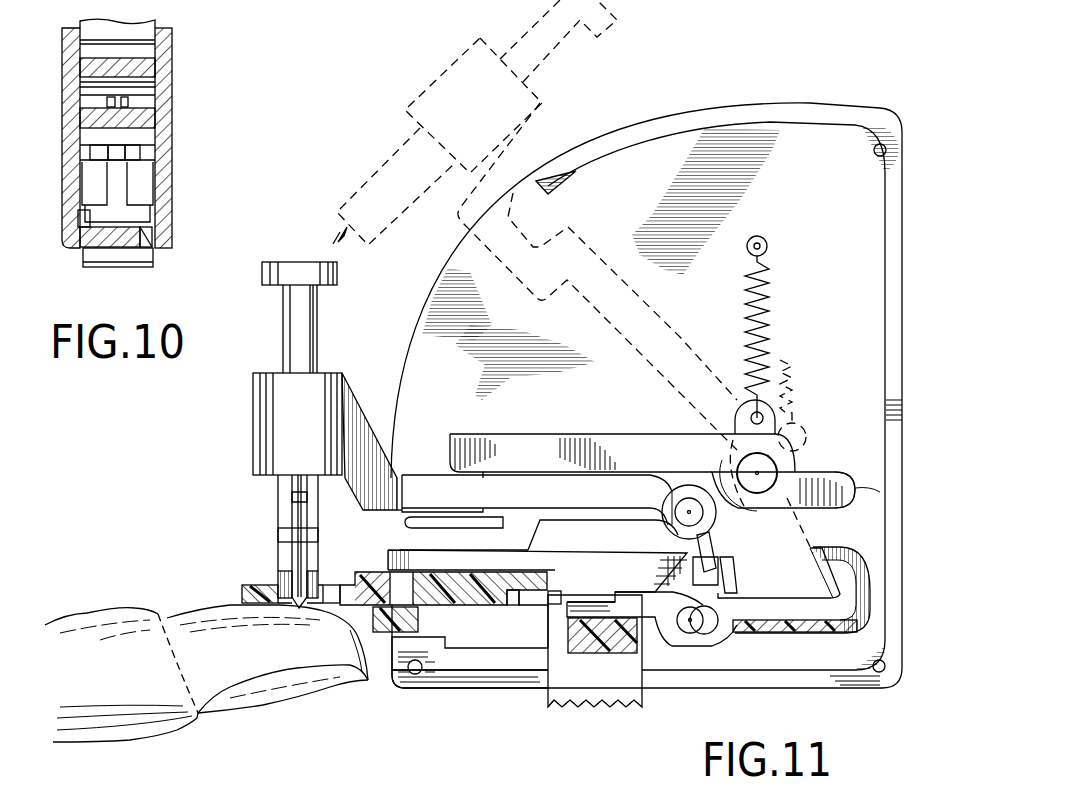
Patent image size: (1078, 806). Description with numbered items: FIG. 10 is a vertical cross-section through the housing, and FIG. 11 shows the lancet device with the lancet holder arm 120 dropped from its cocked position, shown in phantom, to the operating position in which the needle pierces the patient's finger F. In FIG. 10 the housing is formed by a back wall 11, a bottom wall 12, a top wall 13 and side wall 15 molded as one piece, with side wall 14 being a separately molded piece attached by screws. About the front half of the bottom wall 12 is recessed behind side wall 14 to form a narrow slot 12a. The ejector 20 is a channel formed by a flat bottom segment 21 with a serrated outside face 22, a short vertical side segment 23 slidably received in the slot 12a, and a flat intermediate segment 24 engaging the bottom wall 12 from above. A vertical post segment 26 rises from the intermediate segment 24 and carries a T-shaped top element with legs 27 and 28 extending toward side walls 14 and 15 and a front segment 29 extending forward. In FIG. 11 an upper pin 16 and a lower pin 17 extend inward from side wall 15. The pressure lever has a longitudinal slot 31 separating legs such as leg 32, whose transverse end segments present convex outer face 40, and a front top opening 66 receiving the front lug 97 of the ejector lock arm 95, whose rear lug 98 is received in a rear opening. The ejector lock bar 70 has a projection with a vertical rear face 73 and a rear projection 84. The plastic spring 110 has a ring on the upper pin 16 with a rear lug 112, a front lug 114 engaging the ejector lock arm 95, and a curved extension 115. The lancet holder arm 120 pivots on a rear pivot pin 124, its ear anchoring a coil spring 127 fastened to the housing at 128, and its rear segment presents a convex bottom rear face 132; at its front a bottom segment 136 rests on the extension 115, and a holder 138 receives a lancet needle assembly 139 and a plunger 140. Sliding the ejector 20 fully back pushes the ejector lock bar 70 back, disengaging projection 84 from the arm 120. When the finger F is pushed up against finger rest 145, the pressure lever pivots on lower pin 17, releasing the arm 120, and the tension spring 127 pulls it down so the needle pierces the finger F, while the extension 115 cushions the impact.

In FIG. 11, the back wall 11 is at (903, 378).
In FIG. 10, the bottom wall 12 is at (70, 245).
In FIG. 11, the bottom wall 12 is at (513, 676).
In FIG. 10, the slot 12a is at (142, 232).
In FIG. 11, the top wall 13 is at (667, 128).
In FIG. 10, the side wall 14 is at (173, 72).
In FIG. 10, the side wall 15 is at (66, 73).
In FIG. 11, the upper pin 16 is at (701, 512).
In FIG. 11, the lower pin 17 is at (690, 630).
In FIG. 11, the ejector 20 is at (595, 651).
In FIG. 10, the bottom segment 21 is at (121, 256).
In FIG. 11, the serrated outside face 22 is at (604, 706).
In FIG. 10, the side segment 23 is at (146, 228).
In FIG. 10, the intermediate segment 24 is at (88, 218).
In FIG. 10, the post segment 26 is at (117, 188).
In FIG. 10, the leg 27 is at (136, 158).
In FIG. 11, the leg 27 is at (563, 602).
In FIG. 10, the leg 28 is at (95, 155).
In FIG. 10, the front segment 29 is at (114, 150).
In FIG. 11, the front segment 29 is at (511, 605).
In FIG. 11, the longitudinal slot 31 is at (848, 483).
In FIG. 11, the leg 32 is at (805, 632).
In FIG. 11, the convex outer face 40 is at (850, 560).
In FIG. 11, the front top opening 66 is at (419, 579).
In FIG. 11, the ejector lock bar 70 is at (652, 619).
In FIG. 11, the rear face 73 is at (713, 566).
In FIG. 11, the projection 84 is at (838, 563).
In FIG. 11, the ejector lock arm 95 is at (619, 559).
In FIG. 11, the front lug 97 is at (405, 582).
In FIG. 11, the rear lug 98 is at (531, 596).
In FIG. 11, the plastic spring 110 is at (598, 508).
In FIG. 11, the rear lug 112 is at (692, 553).
In FIG. 11, the front lug 114 is at (531, 540).
In FIG. 11, the extension 115 is at (438, 522).
In FIG. 11, the lancet holder arm 120 is at (598, 432).
In FIG. 11, the rear pivot pin 124 is at (748, 470).
In FIG. 11, the coil spring 127 is at (771, 313).
In FIG. 11, the spring anchor 128 is at (765, 243).
In FIG. 11, the convex bottom rear face 132 is at (858, 487).
In FIG. 11, the bottom segment 136 is at (381, 513).
In FIG. 11, the holder 138 is at (253, 440).
In FIG. 11, the lancet needle assembly 139 is at (278, 518).
In FIG. 11, the plunger 140 is at (318, 318).
In FIG. 11, the finger rest 145 is at (256, 585).
In FIG. 11, the patient's finger F is at (293, 703).